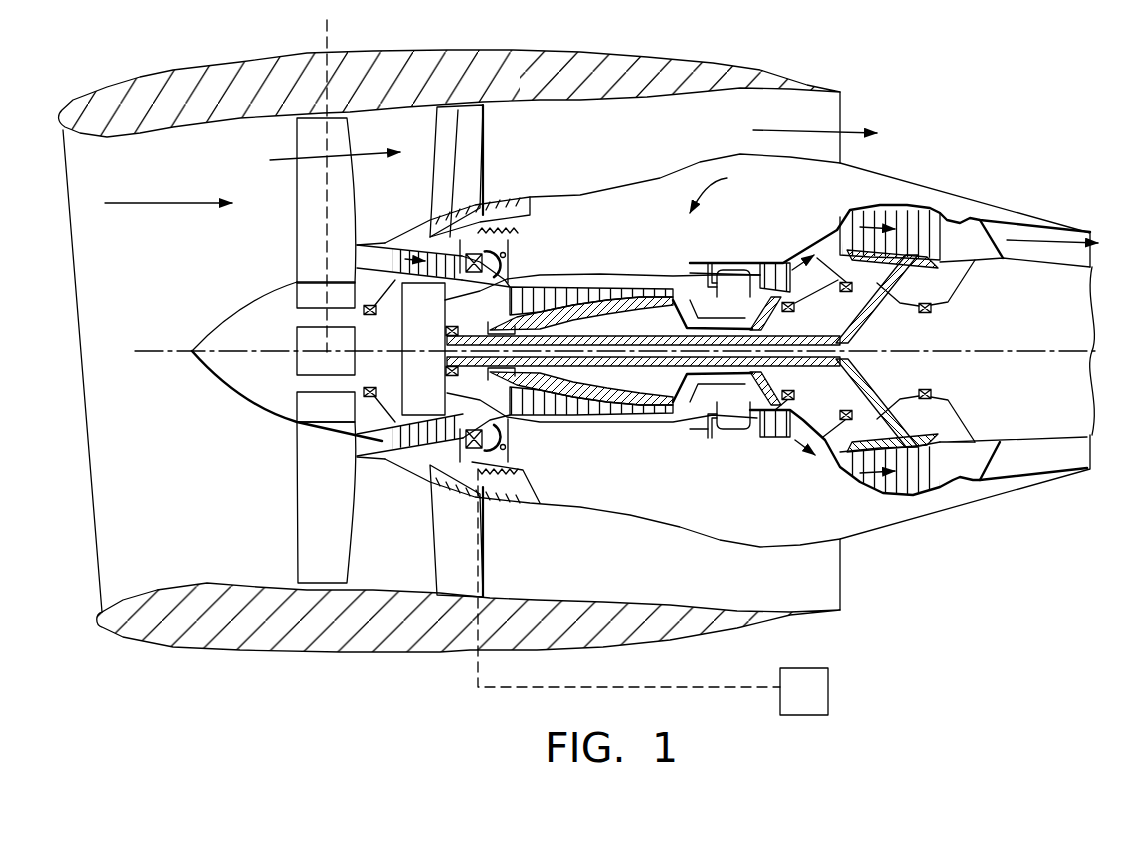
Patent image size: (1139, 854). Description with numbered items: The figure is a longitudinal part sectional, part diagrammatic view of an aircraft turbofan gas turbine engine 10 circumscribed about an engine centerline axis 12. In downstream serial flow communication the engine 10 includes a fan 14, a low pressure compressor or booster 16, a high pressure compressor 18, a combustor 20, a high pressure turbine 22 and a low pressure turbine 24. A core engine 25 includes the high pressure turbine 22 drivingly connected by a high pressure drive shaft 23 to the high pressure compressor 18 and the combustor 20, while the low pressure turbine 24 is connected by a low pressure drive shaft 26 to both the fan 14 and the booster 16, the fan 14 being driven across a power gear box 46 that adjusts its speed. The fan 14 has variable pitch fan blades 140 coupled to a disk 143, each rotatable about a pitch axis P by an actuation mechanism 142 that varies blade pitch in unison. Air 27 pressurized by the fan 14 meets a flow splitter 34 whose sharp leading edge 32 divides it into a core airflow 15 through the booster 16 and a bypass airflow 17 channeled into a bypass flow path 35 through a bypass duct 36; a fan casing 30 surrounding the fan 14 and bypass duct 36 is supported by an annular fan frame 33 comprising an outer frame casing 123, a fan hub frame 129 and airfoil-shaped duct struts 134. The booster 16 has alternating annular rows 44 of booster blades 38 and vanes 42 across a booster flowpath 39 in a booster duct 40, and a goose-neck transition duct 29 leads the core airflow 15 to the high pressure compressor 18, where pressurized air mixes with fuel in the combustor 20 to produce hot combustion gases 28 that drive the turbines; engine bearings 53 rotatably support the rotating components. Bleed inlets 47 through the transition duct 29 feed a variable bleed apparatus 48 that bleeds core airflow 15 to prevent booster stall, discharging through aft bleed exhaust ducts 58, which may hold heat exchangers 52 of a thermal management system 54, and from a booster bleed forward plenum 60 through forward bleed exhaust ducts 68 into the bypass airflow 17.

The aircraft turbofan gas turbine engine 10 is at (1003, 78).
The engine centerline axis 12 is at (768, 383).
The fan 14 is at (293, 518).
The core airflow 15 is at (332, 257).
The booster 16 is at (428, 425).
The bypass airflow 17 is at (800, 130).
The high pressure compressor 18 is at (541, 430).
The combustor 20 is at (727, 432).
The high pressure turbine 22 is at (765, 428).
The high pressure drive shaft 23 is at (765, 319).
The low pressure turbine 24 is at (937, 505).
The core engine 25 is at (724, 189).
The low pressure drive shaft 26 is at (842, 345).
The air 27 is at (313, 153).
The hot combustion gases 28 is at (777, 260).
The transition duct 29 is at (468, 388).
The fan casing 30 is at (210, 650).
The sharp leading edge 32 is at (373, 443).
The fan frame 33 is at (483, 520).
The flow splitter 34 is at (387, 467).
The bypass flow path 35 is at (636, 142).
The bypass duct 36 is at (707, 108).
The booster blades 38 is at (410, 455).
The booster flowpath 39 is at (445, 428).
The booster duct 40 is at (430, 237).
The booster vanes 42 is at (390, 448).
The annular rows 44 is at (423, 240).
The power gear box 46 is at (418, 305).
The bleed inlets 47 is at (473, 277).
The variable bleed apparatus 48 is at (487, 457).
The heat exchangers 52 is at (523, 228).
The engine bearings 53 is at (850, 283).
The thermal management system 54 is at (829, 690).
The aft bleed exhaust ducts 58 is at (513, 195).
The booster bleed forward plenum 60 is at (457, 235).
The forward bleed exhaust ducts 68 is at (463, 493).
The outer frame casing 123 is at (462, 108).
The fan hub frame 129 is at (510, 268).
The duct struts 134 is at (457, 135).
The variable pitch fan blades 140 is at (342, 550).
The actuation mechanism 142 is at (313, 295).
The disk 143 is at (293, 340).
The pitch axis P is at (328, 22).